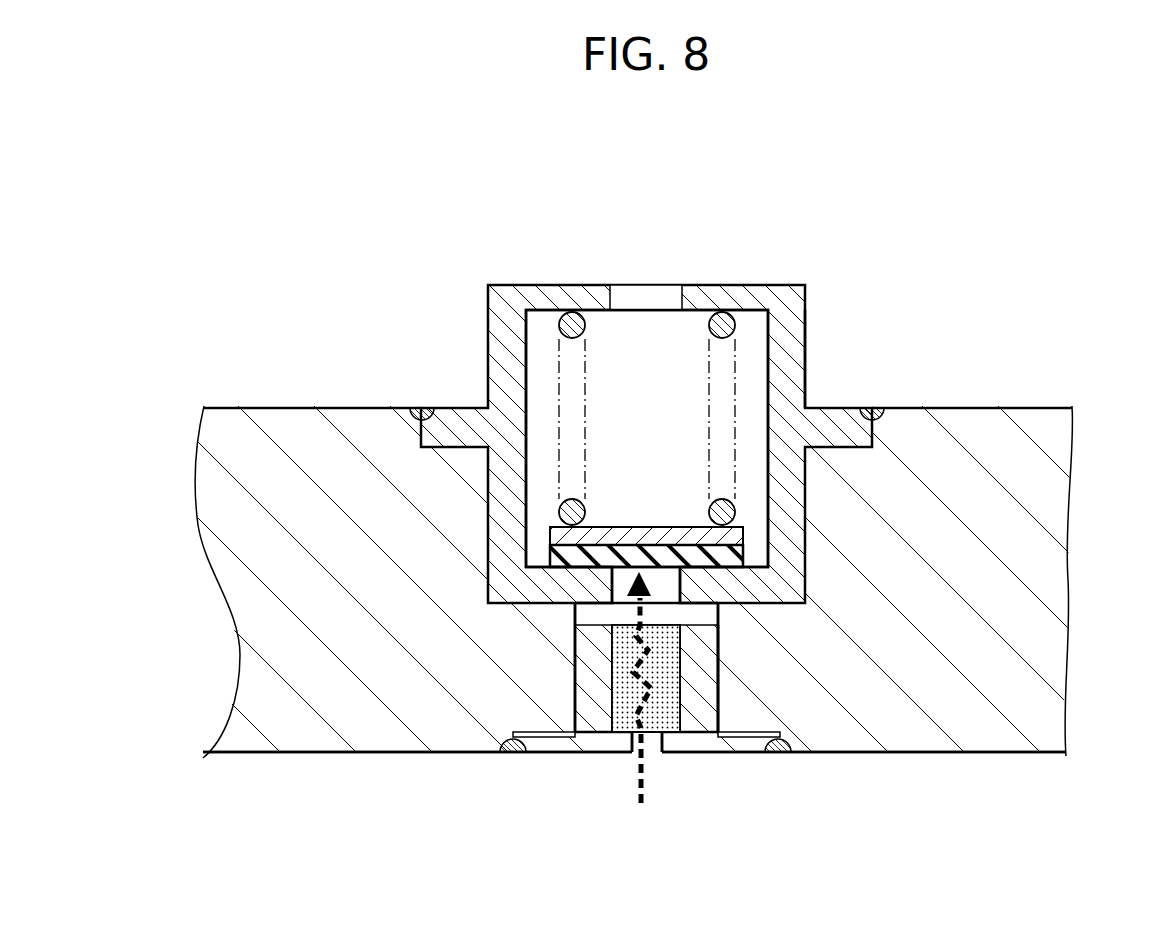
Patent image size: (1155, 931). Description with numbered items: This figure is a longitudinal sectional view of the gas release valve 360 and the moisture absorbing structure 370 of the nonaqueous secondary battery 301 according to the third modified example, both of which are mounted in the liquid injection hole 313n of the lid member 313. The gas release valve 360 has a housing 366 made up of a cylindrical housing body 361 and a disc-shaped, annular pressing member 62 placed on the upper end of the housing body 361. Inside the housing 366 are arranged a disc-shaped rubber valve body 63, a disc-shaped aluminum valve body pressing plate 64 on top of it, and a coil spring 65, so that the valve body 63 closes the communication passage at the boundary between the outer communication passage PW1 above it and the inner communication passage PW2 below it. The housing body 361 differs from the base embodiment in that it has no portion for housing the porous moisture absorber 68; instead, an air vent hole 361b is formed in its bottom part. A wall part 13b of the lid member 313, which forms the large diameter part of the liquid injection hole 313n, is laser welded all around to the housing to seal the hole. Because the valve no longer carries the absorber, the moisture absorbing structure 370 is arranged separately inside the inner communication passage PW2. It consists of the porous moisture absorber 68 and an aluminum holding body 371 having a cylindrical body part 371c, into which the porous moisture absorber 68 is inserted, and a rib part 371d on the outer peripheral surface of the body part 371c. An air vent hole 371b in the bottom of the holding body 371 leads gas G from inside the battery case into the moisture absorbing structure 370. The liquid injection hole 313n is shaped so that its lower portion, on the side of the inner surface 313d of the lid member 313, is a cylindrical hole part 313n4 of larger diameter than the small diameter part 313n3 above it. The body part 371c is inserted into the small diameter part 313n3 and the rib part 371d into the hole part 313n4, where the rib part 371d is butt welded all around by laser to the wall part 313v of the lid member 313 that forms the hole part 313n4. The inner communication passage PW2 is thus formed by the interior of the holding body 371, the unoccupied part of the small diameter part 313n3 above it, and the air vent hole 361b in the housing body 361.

The nonaqueous secondary battery 301 is at (975, 314).
The lid member 313 is at (232, 440).
The wall part 13b is at (426, 440).
The gas release valve 360 is at (716, 290).
The housing body 361 is at (797, 333).
The housing 366 is at (808, 353).
The air vent hole 361b is at (614, 572).
The outer communication passage PW1 is at (766, 354).
The inner communication passage PW2 is at (675, 690).
The pressing member 62 is at (570, 312).
The coil spring 65 is at (559, 333).
The valve body pressing plate 64 is at (548, 533).
The valve body 63 is at (548, 555).
The moisture absorbing structure 370 is at (573, 645).
The holding body 371 is at (573, 677).
The air vent hole 371b is at (657, 754).
The body part 371c is at (573, 703).
The rib part 371d is at (759, 732).
The porous moisture absorber 68 is at (630, 753).
The liquid injection hole 313n is at (712, 626).
The small diameter part 313n3 is at (715, 720).
The hole part 313n4 is at (520, 755).
The wall part 313v is at (777, 753).
The inner surface 313d is at (945, 755).
The gas G is at (640, 795).